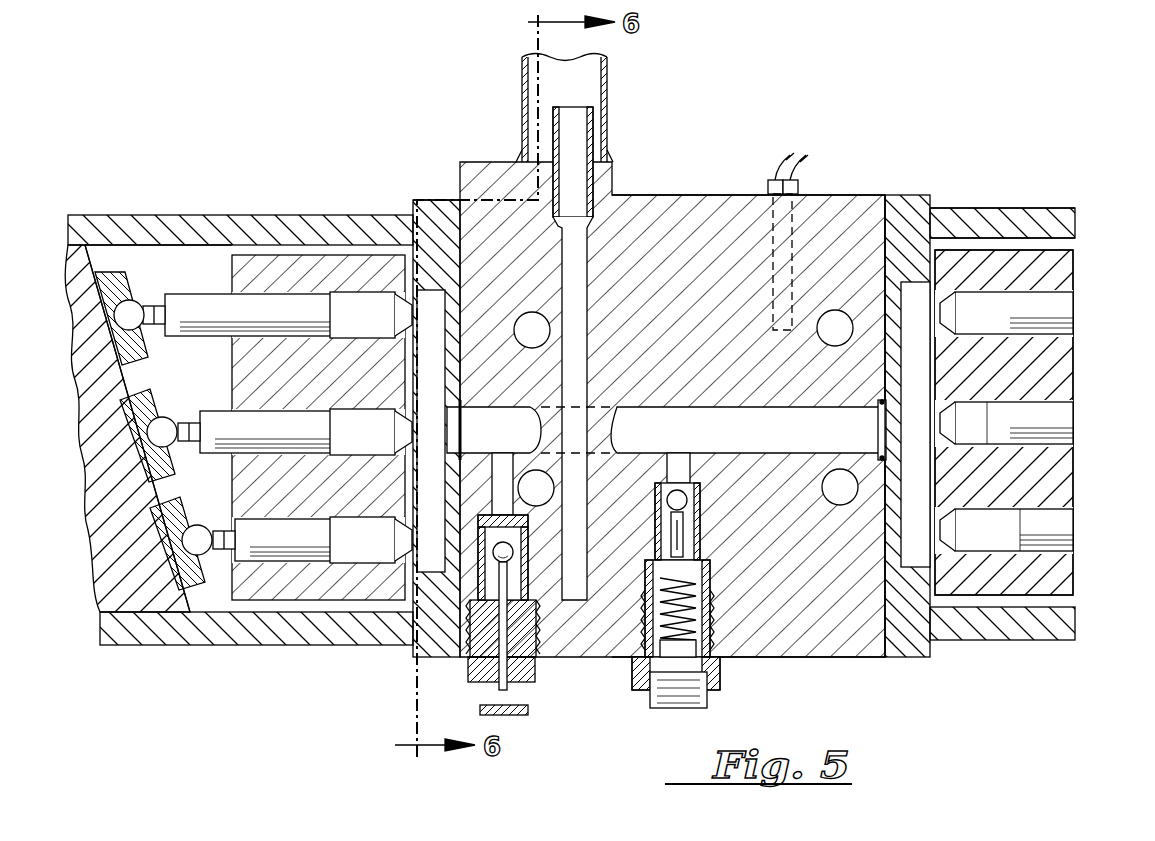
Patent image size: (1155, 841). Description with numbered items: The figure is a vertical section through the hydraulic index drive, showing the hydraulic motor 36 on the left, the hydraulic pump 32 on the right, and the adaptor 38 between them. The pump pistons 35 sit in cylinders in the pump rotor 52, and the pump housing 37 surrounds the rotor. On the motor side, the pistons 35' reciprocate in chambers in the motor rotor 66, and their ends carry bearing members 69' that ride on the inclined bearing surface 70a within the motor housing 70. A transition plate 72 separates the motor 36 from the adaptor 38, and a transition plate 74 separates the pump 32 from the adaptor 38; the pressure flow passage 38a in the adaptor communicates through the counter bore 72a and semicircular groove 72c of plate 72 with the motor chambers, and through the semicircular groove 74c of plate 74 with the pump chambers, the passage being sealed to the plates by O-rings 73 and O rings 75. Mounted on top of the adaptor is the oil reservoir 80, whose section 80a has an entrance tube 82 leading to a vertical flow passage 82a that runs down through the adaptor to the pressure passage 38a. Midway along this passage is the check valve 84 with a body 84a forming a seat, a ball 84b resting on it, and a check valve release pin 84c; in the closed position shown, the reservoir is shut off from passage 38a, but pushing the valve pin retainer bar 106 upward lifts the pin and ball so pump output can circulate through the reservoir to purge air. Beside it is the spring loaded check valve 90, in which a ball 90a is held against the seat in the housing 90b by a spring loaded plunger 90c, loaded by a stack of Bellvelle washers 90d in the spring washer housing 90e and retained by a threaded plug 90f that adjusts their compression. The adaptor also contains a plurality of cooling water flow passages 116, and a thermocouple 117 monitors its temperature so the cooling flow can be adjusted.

The hydraulic pump 32 is at (1060, 218).
The pistons 35 is at (1036, 420).
The pistons 35' is at (263, 427).
The hydraulic motor 36 is at (205, 225).
The pump housing 37 is at (960, 220).
The adaptor 38 is at (838, 210).
The flow passage 38a is at (662, 420).
The pump rotor 52 is at (1060, 480).
The rotor 66 is at (232, 618).
The bearing members 69' is at (121, 431).
The motor housing 70 is at (135, 218).
The inclined bearing surface 70a is at (128, 262).
The transition plate 72 is at (408, 648).
The counter bore 72a is at (460, 396).
The groove 72c is at (312, 645).
The O-rings 73 is at (448, 446).
The transition plate 74 is at (918, 648).
The semicircular groove 74c is at (915, 280).
The O rings 75 is at (880, 405).
The reservoir 80 is at (607, 85).
The reservoir section 80a is at (530, 92).
The entrance tube 82 is at (590, 135).
The flow passage 82a is at (448, 480).
The check valve 84 is at (530, 580).
The body 84a is at (514, 554).
The ball 84b is at (530, 527).
The check valve release pin 84c is at (510, 688).
The check valve 90 is at (725, 672).
The ball 90a is at (692, 490).
The check valve housing 90b is at (700, 522).
The spring loaded plunger 90c is at (684, 530).
The Bellvelle washers 90d is at (708, 600).
The spring washer housing 90e is at (712, 636).
The threaded plug 90f is at (690, 702).
The valve pin retainer bar 106 is at (480, 706).
The flow passages 116 is at (532, 315).
The thermocouple 117 is at (768, 183).